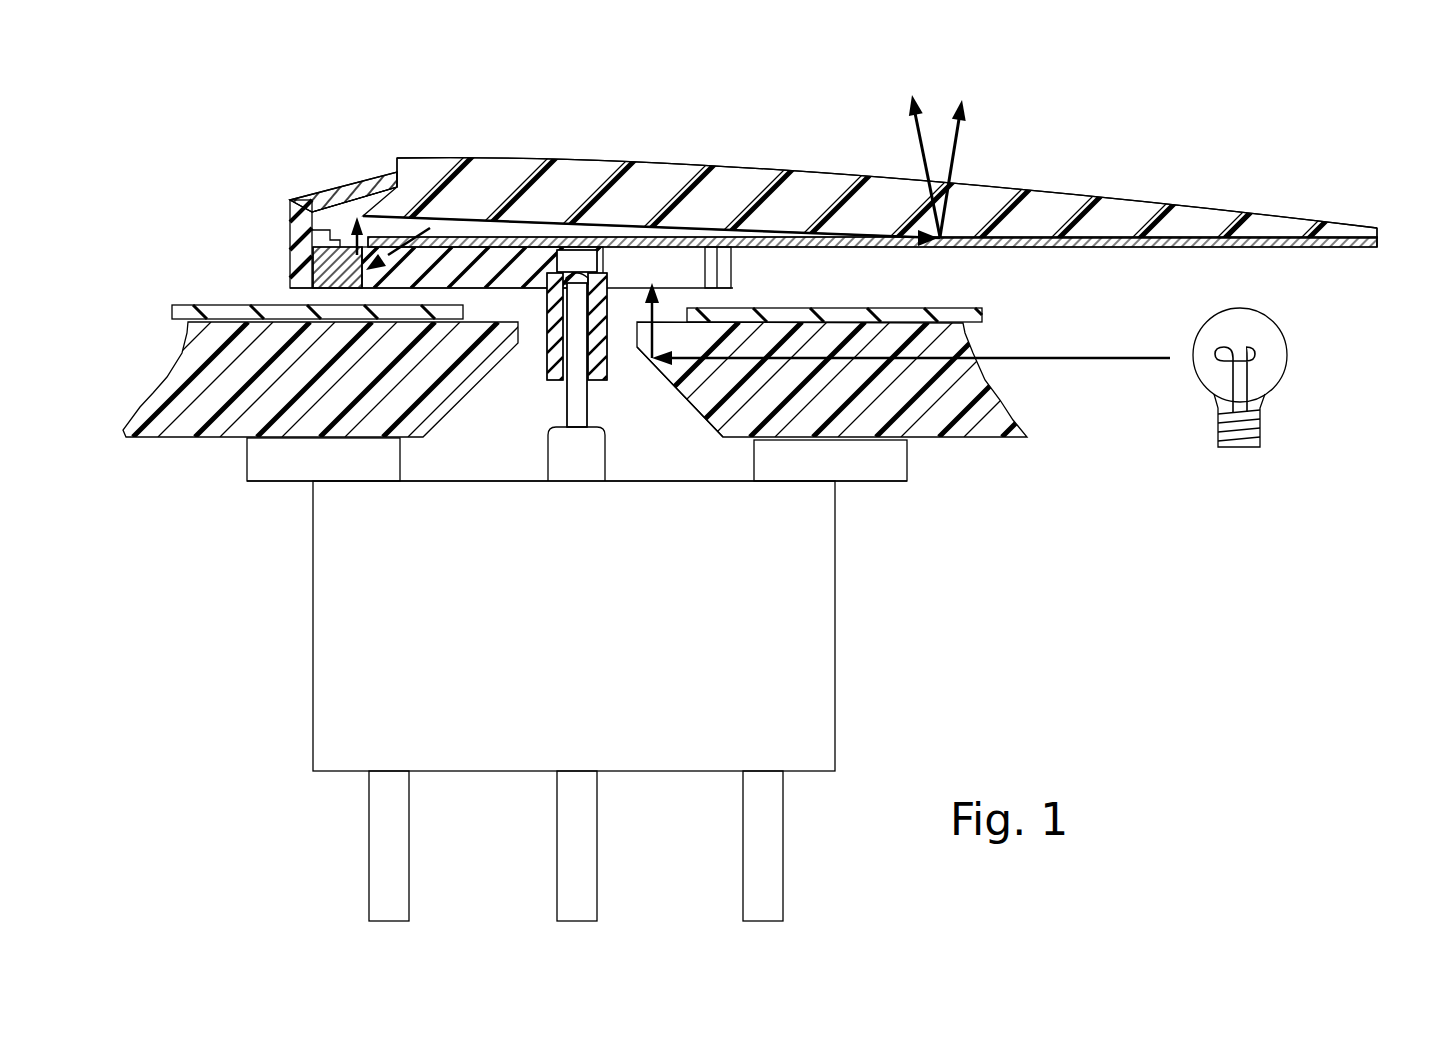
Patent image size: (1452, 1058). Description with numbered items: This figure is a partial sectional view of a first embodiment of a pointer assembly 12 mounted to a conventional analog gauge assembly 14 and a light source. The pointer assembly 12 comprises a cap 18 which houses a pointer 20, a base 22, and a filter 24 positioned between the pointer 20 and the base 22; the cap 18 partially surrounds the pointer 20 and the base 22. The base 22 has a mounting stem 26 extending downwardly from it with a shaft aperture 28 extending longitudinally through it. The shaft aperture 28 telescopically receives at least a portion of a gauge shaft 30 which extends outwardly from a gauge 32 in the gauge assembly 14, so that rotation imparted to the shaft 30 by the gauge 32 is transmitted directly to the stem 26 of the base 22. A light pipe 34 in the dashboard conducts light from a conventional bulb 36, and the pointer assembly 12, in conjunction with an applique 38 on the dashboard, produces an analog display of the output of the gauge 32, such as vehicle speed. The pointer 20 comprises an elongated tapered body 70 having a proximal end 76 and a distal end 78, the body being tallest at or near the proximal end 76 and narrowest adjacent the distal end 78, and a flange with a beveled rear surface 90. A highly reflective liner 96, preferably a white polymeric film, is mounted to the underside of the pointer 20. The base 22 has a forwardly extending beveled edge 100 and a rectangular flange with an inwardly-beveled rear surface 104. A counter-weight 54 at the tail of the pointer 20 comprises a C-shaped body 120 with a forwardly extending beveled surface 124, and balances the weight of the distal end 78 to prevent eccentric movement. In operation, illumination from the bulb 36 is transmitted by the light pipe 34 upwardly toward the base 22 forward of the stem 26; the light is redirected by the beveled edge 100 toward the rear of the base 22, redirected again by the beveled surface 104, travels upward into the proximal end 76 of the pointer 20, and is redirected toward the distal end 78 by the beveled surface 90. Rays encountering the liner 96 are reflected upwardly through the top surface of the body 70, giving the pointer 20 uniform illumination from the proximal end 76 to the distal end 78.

The pointer assembly 12 is at (820, 124).
The gauge assembly 14 is at (840, 645).
The cap 18 is at (323, 185).
The pointer 20 is at (1158, 190).
The base 22 is at (618, 362).
The filter 24 is at (710, 244).
The mounting stem 26 is at (548, 357).
The shaft aperture 28 is at (614, 352).
The gauge shaft 30 is at (573, 407).
The gauge 32 is at (567, 663).
The light pipe 34 is at (210, 408).
The bulb 36 is at (1218, 318).
The applique 38 is at (214, 305).
The counter-weight 54 is at (323, 262).
The tapered body 70 is at (1260, 217).
The proximal end 76 is at (617, 157).
The distal end 78 is at (1378, 232).
The beveled rear surface 90 is at (362, 223).
The liner 96 is at (982, 241).
The beveled edge 100 is at (652, 285).
The beveled rear surface 104 is at (462, 284).
The C-shaped body 120 is at (331, 270).
The beveled surface 124 is at (365, 288).